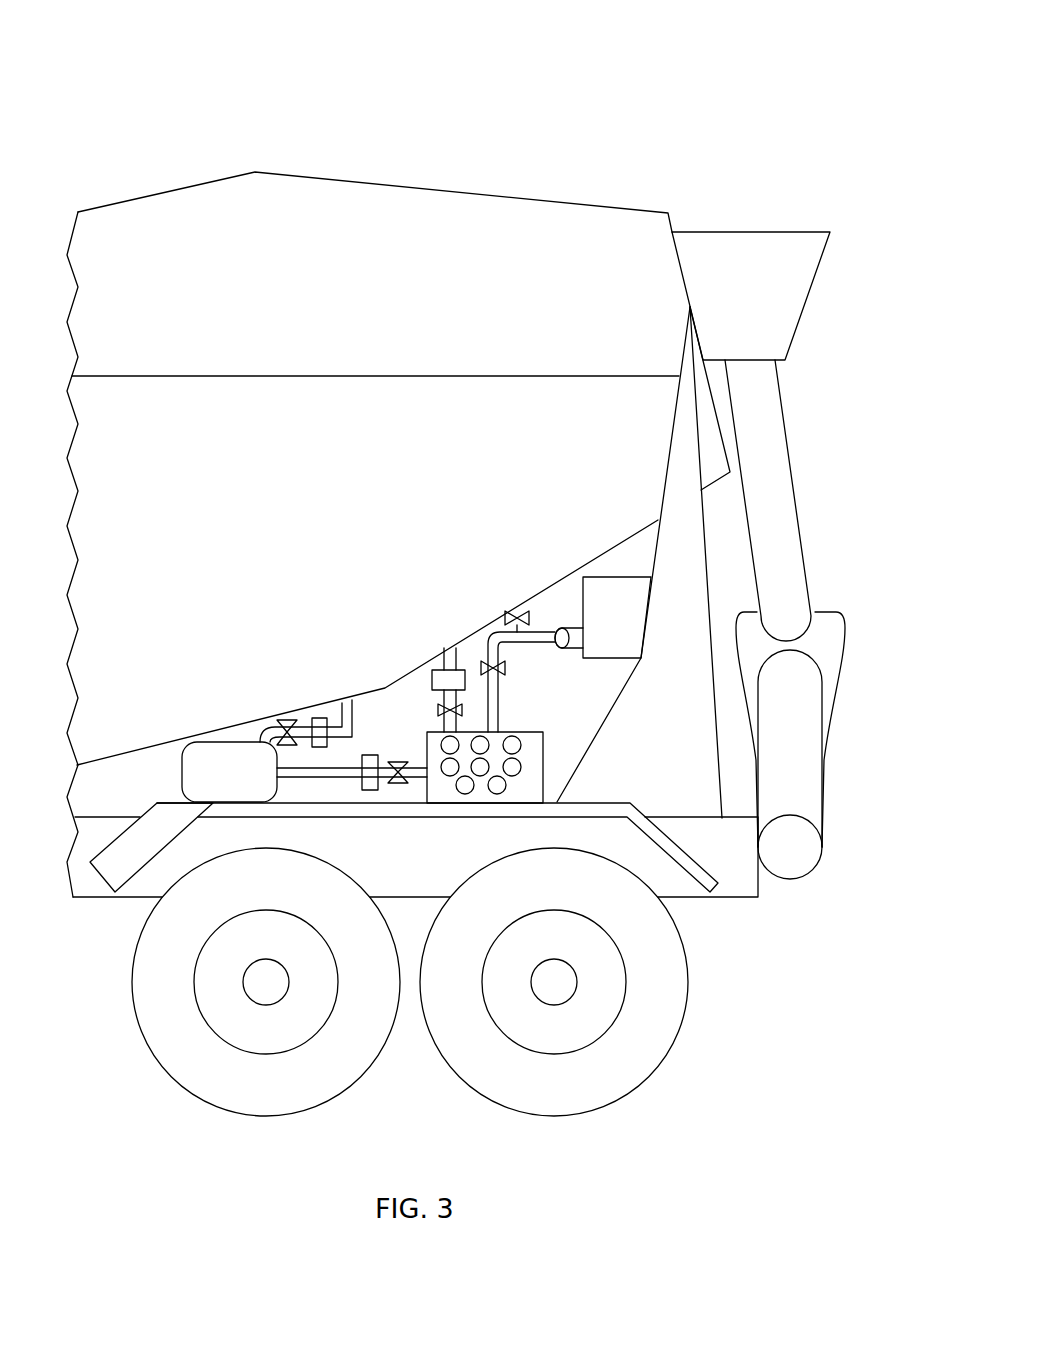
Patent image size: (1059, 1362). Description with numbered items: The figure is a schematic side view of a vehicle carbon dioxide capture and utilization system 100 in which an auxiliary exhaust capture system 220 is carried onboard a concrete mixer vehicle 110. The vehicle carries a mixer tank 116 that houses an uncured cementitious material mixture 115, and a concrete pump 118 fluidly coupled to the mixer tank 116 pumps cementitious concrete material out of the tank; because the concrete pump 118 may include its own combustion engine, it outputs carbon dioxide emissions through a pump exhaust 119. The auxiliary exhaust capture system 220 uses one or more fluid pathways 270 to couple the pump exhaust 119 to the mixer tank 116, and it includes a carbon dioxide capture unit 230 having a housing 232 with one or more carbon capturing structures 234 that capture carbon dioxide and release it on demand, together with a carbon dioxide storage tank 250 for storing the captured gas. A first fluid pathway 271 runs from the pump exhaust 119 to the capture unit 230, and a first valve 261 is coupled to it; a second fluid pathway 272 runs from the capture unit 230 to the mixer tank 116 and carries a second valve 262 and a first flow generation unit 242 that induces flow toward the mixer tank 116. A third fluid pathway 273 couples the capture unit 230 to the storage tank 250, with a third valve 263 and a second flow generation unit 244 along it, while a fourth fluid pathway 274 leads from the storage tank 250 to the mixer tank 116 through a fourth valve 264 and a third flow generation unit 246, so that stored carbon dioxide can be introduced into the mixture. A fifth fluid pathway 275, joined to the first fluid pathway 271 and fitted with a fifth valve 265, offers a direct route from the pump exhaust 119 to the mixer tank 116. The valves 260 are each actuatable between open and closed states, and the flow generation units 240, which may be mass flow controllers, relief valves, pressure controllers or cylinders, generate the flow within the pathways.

The vehicle CO2 capture and utilization system 100 is at (790, 93).
The concrete mixer vehicle 110 is at (482, 195).
The cementitious material mixture 115 is at (330, 376).
The mixer tank 116 is at (617, 212).
The concrete pump 118 is at (616, 577).
The pump exhaust 119 is at (577, 627).
The auxiliary exhaust capture system 220 is at (610, 698).
The CO2 capture unit 230 is at (475, 803).
The housing 232 is at (545, 762).
The carbon capturing structures 234 is at (508, 785).
The flow generation units 240 is at (422, 672).
The first flow generation unit 242 is at (432, 690).
The second flow generation unit 244 is at (370, 790).
The third flow generation unit 246 is at (300, 768).
The CO2 storage tank 250 is at (195, 752).
The valves 260 is at (500, 623).
The first valve 261 is at (480, 668).
The second valve 262 is at (438, 708).
The third valve 263 is at (402, 784).
The fourth valve 264 is at (285, 720).
The fifth valve 265 is at (517, 625).
The fluid pathways 270 is at (552, 602).
The first fluid pathway 271 is at (548, 648).
The second fluid pathway 272 is at (447, 667).
The third fluid pathway 273 is at (312, 778).
The fourth fluid pathway 274 is at (337, 713).
The fifth fluid pathway 275 is at (521, 612).